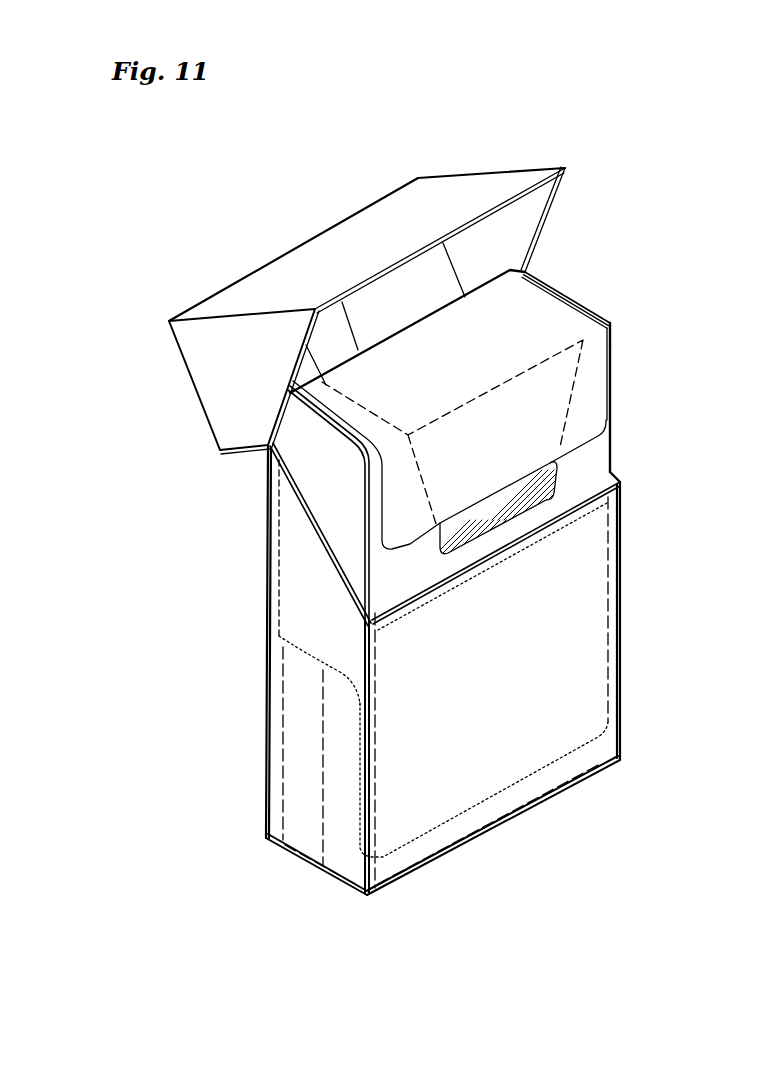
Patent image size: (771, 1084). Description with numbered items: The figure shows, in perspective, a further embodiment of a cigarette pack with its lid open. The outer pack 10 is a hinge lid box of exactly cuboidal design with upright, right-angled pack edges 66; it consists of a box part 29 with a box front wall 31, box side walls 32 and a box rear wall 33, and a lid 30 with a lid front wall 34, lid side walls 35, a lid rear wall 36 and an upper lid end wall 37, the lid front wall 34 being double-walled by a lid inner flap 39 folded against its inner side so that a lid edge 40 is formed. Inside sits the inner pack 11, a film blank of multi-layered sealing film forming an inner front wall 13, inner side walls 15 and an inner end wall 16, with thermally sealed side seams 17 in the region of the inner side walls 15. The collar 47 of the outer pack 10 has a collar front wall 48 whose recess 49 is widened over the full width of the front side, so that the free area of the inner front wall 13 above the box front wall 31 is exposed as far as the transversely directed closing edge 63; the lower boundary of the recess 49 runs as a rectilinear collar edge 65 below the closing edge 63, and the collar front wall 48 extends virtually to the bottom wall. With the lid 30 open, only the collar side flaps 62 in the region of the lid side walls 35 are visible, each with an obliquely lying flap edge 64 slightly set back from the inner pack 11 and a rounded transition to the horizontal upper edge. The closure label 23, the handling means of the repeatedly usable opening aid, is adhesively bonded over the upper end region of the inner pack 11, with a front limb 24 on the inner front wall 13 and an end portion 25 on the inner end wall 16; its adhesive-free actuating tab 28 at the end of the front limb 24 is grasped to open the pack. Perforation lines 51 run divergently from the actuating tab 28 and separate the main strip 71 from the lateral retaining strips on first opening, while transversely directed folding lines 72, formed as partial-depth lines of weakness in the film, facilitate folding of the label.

The outer pack 10 is at (430, 552).
The inner pack 11 is at (430, 552).
The inner front wall 13 is at (597, 453).
The inner side walls 15 is at (369, 467).
The inner end wall 16 is at (598, 305).
The side seams 17 is at (272, 468).
The closure label 23 is at (408, 557).
The front limb 24 is at (593, 403).
The end portion 25 is at (533, 293).
The actuating tab 28 is at (523, 493).
The box part 29 is at (233, 750).
The lid 30 is at (318, 280).
The box front wall 31 is at (502, 688).
The box side walls 32 is at (256, 682).
The box rear wall 33 is at (267, 530).
The lid front wall 34 is at (432, 200).
The lid side walls 35 is at (195, 388).
The lid rear wall 36 is at (253, 452).
The lid end wall 37 is at (337, 303).
The lid inner flap 39 is at (400, 262).
The lid edge 40 is at (505, 200).
The collar 47 is at (642, 398).
The collar front wall 48 is at (560, 760).
The recess 49 is at (593, 377).
The perforation lines 51 is at (553, 323).
The collar side flaps 62 is at (612, 350).
The closing edge 63 is at (500, 573).
The flap edge 64 is at (369, 543).
The collar edge 65 is at (543, 510).
The pack edges 66 is at (622, 685).
The main strip 71 is at (339, 323).
The folding lines 72 is at (455, 393).